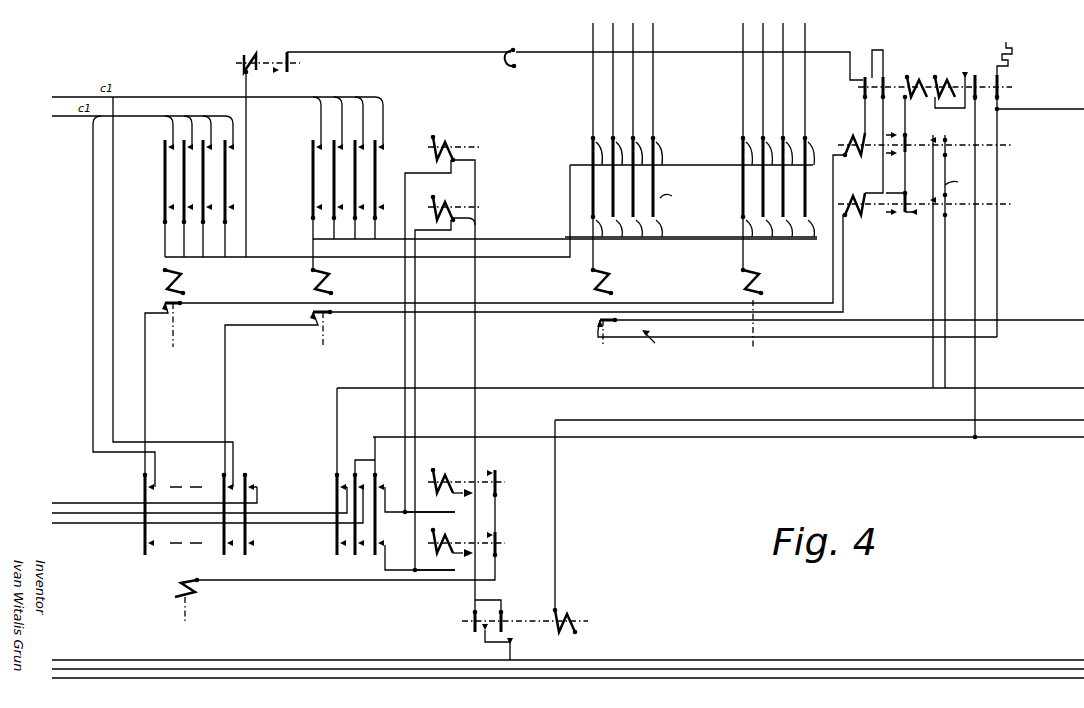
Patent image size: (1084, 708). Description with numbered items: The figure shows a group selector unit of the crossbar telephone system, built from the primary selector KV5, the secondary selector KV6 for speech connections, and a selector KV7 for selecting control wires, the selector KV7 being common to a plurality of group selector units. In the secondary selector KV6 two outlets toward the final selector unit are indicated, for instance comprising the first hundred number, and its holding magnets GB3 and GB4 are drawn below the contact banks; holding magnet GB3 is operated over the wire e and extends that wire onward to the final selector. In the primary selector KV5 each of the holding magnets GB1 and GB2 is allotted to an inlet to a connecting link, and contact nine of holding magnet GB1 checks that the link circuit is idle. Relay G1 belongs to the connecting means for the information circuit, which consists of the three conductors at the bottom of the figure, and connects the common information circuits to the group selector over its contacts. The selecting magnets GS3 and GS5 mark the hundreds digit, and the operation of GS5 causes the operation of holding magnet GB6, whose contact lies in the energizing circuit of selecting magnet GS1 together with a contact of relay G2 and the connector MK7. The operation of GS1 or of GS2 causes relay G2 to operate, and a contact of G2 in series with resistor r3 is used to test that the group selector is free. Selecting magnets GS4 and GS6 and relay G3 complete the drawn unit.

The relay G3 is at (242, 148).
The connector MK7 is at (575, 66).
The secondary selector KV6 is at (490, 168).
The selecting magnet GS3 is at (463, 366).
The selecting magnet GS4 is at (468, 375).
The primary selector KV5 is at (691, 146).
The relay G2 is at (970, 243).
The resistor r3 is at (1017, 51).
The selecting magnet GS1 is at (607, 242).
The selecting magnet GS2 is at (681, 204).
The holding magnet GB3 is at (172, 371).
The holding magnet GB4 is at (286, 357).
The holding magnet GB1 is at (834, 321).
The holding magnet GB2 is at (756, 321).
The selector for control wires KV7 is at (299, 479).
The selecting magnet GS5 is at (471, 492).
The selecting magnet GS6 is at (368, 546).
The holding magnet GB6 is at (179, 612).
The relay G1 is at (539, 540).